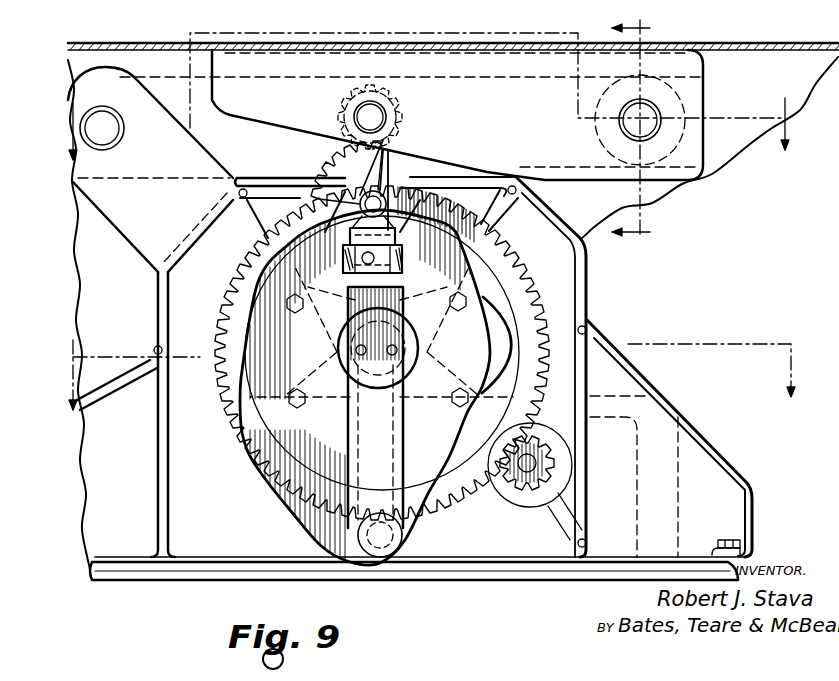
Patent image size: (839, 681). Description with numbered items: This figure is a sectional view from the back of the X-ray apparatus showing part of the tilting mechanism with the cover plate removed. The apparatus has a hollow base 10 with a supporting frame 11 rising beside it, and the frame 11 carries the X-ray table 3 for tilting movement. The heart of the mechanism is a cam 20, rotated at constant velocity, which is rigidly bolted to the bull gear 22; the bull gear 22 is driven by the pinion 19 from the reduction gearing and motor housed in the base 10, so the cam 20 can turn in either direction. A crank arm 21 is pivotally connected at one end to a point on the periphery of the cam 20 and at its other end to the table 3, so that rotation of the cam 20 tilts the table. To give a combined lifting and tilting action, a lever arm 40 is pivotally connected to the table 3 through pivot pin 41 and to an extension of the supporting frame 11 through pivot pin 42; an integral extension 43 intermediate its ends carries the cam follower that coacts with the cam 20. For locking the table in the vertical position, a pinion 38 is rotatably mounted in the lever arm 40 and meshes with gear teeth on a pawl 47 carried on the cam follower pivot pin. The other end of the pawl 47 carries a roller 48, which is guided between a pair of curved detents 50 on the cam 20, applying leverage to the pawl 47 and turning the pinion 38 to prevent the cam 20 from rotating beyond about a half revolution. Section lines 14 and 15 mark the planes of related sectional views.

The X-ray table 3 is at (778, 42).
The base 10 is at (433, 390).
The supporting frame 11 is at (590, 312).
The section line 14- 14 is at (487, 134).
The section line 15- 15 is at (441, 135).
The pinion 19 is at (505, 480).
The cam 20 is at (273, 513).
The crank arm 21 is at (405, 455).
The bull gear 22 is at (520, 262).
The pinion 38 is at (407, 123).
The lever arm 40 is at (280, 175).
The pivot pin 41 is at (625, 123).
The pivot pin 42 is at (122, 133).
The integral extension 43 is at (332, 175).
The pawl 47 is at (389, 165).
The roller 48 is at (358, 268).
The curved detents 50 is at (392, 246).